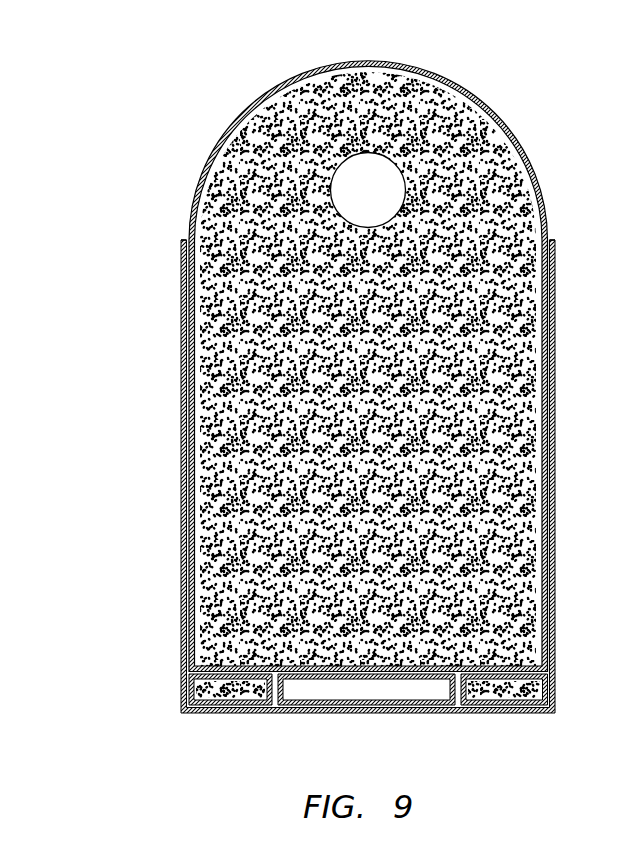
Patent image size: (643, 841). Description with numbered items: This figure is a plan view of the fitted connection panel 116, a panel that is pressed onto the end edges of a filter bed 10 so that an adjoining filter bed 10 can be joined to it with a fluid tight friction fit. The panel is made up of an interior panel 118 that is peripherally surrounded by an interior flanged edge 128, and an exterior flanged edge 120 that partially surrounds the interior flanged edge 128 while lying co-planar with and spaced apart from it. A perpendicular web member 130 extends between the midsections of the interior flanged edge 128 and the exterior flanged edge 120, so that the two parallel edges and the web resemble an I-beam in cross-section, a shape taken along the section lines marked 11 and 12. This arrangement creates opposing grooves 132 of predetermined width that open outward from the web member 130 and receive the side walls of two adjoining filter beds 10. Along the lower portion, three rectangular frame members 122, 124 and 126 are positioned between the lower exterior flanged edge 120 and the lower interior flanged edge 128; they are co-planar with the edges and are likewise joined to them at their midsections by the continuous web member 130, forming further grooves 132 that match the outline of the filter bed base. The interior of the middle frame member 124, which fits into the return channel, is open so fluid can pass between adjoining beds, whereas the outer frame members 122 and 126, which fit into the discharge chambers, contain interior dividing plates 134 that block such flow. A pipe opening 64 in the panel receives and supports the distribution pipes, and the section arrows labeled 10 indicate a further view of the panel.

The filter bed 10 is at (369, 55).
The section line for FIG. 11 is at (175, 447).
The section line for FIG. 12 is at (173, 687).
The pipe opening 64 is at (385, 170).
The fitted connection panel 116 is at (372, 362).
The interior panel 118 is at (470, 162).
The exterior flanged edge 120 is at (184, 330).
The frame member 122 is at (191, 697).
The frame member 124 is at (385, 713).
The frame member 126 is at (549, 694).
The interior flanged edge 128 is at (232, 130).
The web member 130 is at (548, 323).
The grooves 132 is at (552, 239).
The interior dividing plates 134 is at (232, 688).